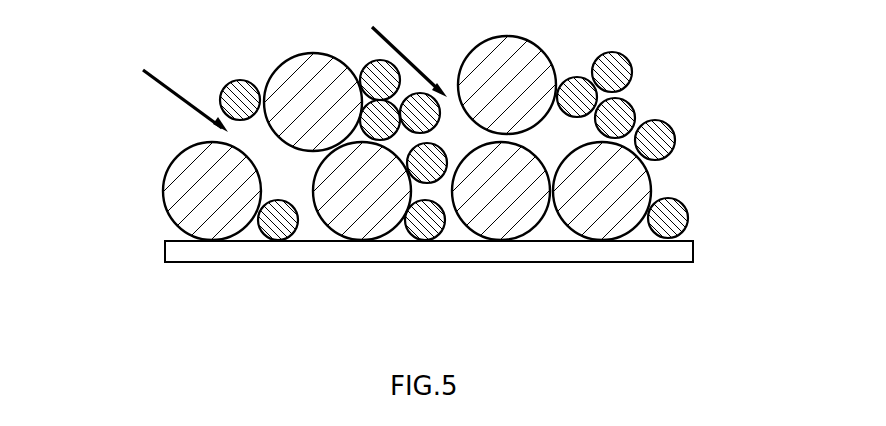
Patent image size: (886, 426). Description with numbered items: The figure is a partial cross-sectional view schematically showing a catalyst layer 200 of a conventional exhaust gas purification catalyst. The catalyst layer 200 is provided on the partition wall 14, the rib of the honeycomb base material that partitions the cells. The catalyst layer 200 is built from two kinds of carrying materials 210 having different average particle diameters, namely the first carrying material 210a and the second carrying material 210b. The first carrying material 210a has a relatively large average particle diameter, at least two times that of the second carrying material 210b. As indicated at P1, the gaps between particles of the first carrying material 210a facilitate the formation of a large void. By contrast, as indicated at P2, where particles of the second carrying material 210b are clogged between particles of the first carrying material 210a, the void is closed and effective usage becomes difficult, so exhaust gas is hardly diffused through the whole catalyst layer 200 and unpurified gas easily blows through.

The partition wall 14 is at (633, 257).
The catalyst layer 200 is at (100, 62).
The carrying materials 210 is at (760, 130).
The first carrying material 210a is at (642, 185).
The second carrying material 210b is at (677, 143).
The large void P1 is at (270, 153).
The closed void P2 is at (553, 140).